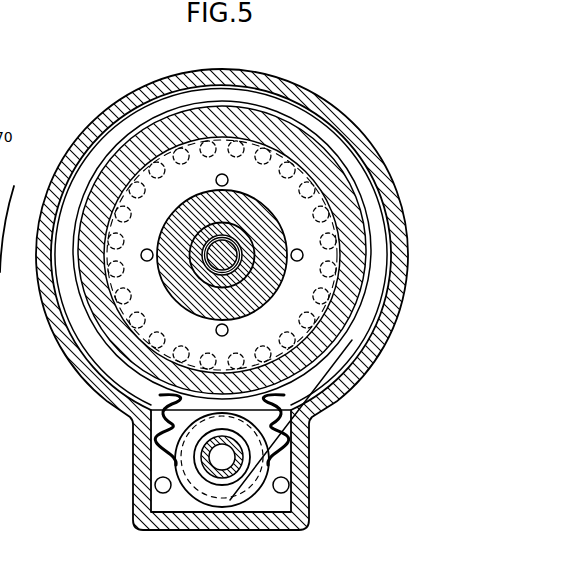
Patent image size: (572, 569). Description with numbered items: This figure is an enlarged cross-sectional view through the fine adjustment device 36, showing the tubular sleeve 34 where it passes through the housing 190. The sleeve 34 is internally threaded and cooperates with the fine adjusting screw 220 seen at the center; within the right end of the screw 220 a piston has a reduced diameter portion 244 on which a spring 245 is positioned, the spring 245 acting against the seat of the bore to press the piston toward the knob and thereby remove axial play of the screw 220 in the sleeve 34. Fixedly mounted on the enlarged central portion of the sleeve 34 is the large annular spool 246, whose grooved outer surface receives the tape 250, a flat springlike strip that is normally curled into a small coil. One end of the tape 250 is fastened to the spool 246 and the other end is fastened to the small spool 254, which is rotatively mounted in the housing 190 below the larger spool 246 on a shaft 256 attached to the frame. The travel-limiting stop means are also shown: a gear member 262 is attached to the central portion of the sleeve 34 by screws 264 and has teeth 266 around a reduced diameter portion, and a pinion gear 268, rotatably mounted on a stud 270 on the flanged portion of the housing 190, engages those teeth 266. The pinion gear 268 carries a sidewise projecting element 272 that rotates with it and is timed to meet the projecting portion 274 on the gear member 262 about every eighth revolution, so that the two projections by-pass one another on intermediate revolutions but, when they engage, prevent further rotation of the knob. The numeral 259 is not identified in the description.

The fine adjustment device 36 is at (222, 278).
The housing 190 is at (339, 110).
The tape 250 is at (319, 145).
The large annular spool 246 is at (338, 173).
The reduced diameter portion 244 is at (222, 242).
The tubular sleeve 34 is at (257, 233).
The spring 245 is at (240, 262).
The screws 264 is at (146, 248).
The fine adjusting screw 220 is at (197, 268).
The projecting portion 274 is at (105, 305).
The teeth 266 is at (110, 380).
The gear member 262 is at (378, 366).
The pinion gear 268 is at (288, 431).
The sidewise projecting element 272 is at (177, 431).
The stud 270 is at (312, 452).
The lower bearing 259 is at (196, 457).
The shaft 256 is at (252, 463).
The small spool 254 is at (230, 500).